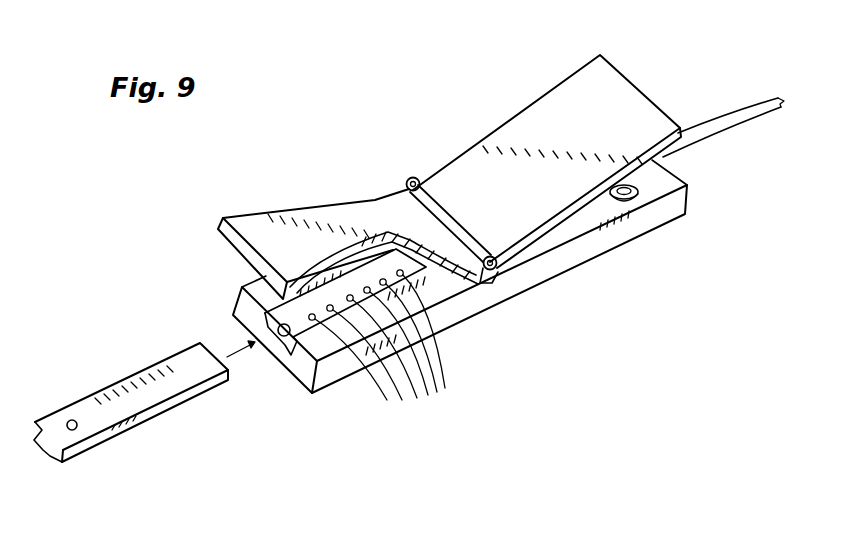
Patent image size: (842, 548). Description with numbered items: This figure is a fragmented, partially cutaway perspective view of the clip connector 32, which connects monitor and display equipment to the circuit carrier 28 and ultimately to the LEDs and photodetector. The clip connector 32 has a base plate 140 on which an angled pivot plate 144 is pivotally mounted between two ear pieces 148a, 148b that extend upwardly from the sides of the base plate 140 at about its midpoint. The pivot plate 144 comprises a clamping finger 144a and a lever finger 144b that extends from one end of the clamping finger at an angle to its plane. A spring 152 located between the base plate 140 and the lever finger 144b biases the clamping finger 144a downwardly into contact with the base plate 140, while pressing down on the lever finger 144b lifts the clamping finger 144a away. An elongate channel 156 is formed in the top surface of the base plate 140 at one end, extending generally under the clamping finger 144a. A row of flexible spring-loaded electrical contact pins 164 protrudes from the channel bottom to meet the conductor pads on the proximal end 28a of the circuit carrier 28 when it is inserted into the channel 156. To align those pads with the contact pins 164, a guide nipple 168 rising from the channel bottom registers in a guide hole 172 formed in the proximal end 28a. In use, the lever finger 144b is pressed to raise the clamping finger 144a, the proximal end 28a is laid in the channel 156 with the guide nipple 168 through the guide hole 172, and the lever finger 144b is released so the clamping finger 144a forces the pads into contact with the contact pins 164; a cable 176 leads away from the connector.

The circuit carrier 28 is at (138, 418).
The proximal end 28a is at (170, 410).
The clip connector 32 is at (422, 148).
The base plate 140 is at (572, 255).
The pivot plate 144 is at (451, 165).
The clamping finger 144a is at (265, 232).
The lever finger 144b is at (612, 95).
The ear piece 148a is at (405, 183).
The ear piece 148b is at (496, 270).
The spring 152 is at (657, 193).
The elongate channel 156 is at (255, 310).
The electrical contact pins 164 is at (391, 338).
The guide nipple 168 is at (278, 336).
The guide hole 172 is at (75, 426).
The cable 176 is at (742, 127).